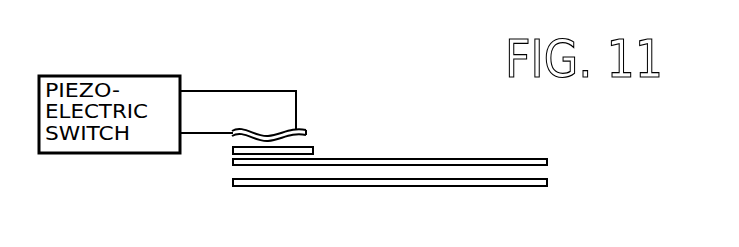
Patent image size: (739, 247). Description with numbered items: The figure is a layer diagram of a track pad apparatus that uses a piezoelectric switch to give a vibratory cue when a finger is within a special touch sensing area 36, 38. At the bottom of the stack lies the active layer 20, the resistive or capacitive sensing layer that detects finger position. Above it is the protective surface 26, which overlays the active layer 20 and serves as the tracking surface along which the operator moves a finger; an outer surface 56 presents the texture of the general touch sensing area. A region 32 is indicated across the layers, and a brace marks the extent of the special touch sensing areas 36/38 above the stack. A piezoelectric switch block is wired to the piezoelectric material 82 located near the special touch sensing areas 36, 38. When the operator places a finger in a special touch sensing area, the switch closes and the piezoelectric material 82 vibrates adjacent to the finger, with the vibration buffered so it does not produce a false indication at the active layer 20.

The active layer 20 is at (548, 182).
The protective surface 26 is at (548, 161).
The sensing region 32 is at (548, 145).
The special touch sensing area 36 is at (251, 86).
The special touch sensing area 38 is at (320, 78).
The outer surface 56 is at (233, 150).
The piezoelectric material 82 is at (308, 132).